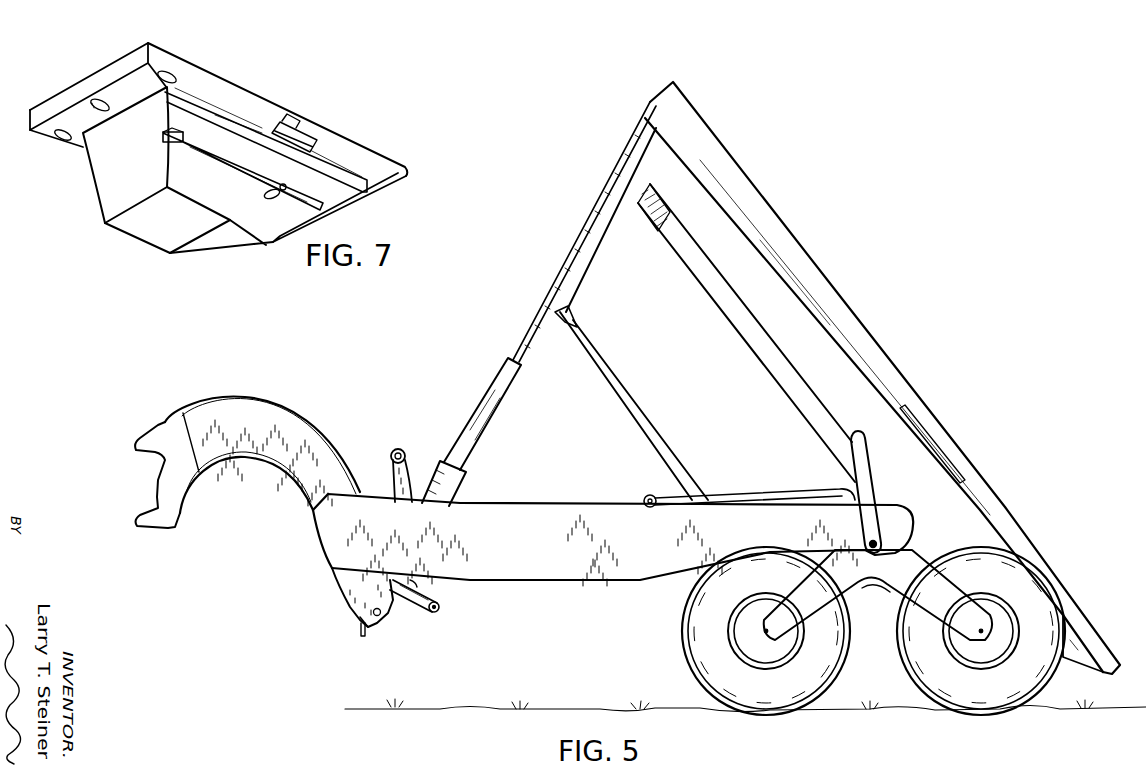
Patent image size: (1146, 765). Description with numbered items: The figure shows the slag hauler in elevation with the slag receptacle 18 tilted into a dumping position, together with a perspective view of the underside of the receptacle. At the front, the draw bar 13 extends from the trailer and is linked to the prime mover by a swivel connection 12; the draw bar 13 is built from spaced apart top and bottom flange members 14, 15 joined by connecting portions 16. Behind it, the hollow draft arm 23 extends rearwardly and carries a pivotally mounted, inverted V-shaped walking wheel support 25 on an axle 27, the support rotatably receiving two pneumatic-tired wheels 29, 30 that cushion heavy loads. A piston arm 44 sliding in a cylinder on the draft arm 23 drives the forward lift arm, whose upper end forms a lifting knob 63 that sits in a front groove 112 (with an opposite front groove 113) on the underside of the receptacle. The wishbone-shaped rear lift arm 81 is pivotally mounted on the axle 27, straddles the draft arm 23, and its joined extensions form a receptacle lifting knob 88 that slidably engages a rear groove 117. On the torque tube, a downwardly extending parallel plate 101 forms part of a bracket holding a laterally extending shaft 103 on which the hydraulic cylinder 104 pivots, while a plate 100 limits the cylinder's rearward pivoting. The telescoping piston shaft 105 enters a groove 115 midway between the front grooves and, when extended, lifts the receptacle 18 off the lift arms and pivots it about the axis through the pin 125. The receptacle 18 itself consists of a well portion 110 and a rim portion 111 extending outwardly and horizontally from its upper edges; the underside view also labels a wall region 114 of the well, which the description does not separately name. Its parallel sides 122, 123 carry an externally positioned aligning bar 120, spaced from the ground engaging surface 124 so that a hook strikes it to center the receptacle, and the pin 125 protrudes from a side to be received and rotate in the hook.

In FIG. 5, the swivel connection 12 is at (133, 457).
In FIG. 5, the draw bar 13 is at (305, 404).
In FIG. 5, the top flange member 14 is at (245, 397).
In FIG. 5, the bottom flange member 15 is at (263, 468).
In FIG. 5, the connecting portions 16 is at (205, 415).
In FIG. 7, the slag receptacle 18 is at (218, 142).
In FIG. 5, the slag receptacle 18 is at (975, 441).
In FIG. 5, the draft arm 23 is at (557, 562).
In FIG. 5, the walking wheel support 25 is at (932, 602).
In FIG. 5, the axle 27 is at (867, 555).
In FIG. 5, the wheel 29 is at (757, 700).
In FIG. 5, the wheel 30 is at (976, 698).
In FIG. 5, the piston arm 44 is at (418, 604).
In FIG. 5, the lifting knob 63 is at (405, 450).
In FIG. 5, the rear lift arm 81 is at (830, 490).
In FIG. 5, the receptacle lifting knob 88 is at (850, 441).
In FIG. 5, the plate 100 is at (357, 624).
In FIG. 5, the parallel plate 101 is at (343, 587).
In FIG. 5, the shaft 103 is at (362, 634).
In FIG. 5, the hydraulic cylinder 104 is at (453, 490).
In FIG. 5, the telescoping piston shaft 105 is at (497, 404).
In FIG. 7, the well portion 110 is at (243, 213).
In FIG. 7, the rim portion 111 is at (235, 90).
In FIG. 7, the front groove 112 is at (166, 72).
In FIG. 7, the front groove 113 is at (62, 143).
In FIG. 7, the slide member side wall 114 is at (103, 160).
In FIG. 7, the groove 115 is at (100, 98).
In FIG. 7, the rear groove 117 is at (318, 148).
In FIG. 7, the aligning bar 120 is at (188, 147).
In FIG. 5, the aligning bar 120 is at (723, 307).
In FIG. 7, the side 122 is at (168, 152).
In FIG. 7, the side 123 is at (98, 213).
In FIG. 7, the ground engaging surface 124 is at (143, 232).
In FIG. 7, the pin 125 is at (265, 194).